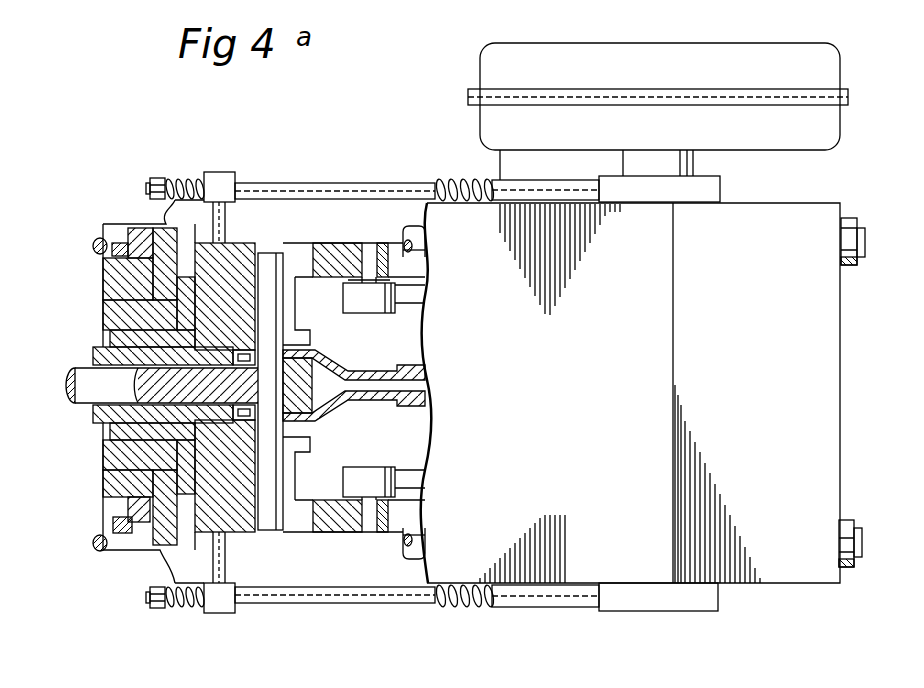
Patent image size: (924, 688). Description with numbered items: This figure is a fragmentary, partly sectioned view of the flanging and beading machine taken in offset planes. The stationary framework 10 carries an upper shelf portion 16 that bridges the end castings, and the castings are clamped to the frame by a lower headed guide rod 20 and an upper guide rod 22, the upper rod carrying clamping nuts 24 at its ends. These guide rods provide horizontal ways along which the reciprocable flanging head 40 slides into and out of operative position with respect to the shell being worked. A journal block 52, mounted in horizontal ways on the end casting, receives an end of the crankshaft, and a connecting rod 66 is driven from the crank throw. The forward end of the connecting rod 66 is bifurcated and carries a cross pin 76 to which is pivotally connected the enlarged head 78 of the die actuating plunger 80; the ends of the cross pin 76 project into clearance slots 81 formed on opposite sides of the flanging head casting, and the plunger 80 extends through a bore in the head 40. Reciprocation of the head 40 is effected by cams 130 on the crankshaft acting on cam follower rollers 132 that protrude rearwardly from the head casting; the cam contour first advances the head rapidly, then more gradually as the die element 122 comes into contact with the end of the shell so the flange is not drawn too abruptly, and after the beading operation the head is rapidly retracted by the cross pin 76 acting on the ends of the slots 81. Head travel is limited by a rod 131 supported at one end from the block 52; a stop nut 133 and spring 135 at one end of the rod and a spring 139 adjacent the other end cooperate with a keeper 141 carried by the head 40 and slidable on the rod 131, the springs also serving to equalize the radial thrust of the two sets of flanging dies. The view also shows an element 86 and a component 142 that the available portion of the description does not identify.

The stationary framework 10 is at (806, 386).
The upper shelf portion 16 is at (563, 455).
The headed guide rod 20 is at (108, 233).
The upper guide rod 22 is at (422, 242).
The clamping nut 24 is at (852, 222).
The reciprocable flanging head 40 is at (244, 535).
The journal block 52 is at (706, 196).
The connecting rod 66 is at (425, 363).
The cross pin 76 is at (268, 268).
The enlarged head 78 is at (318, 356).
The die actuating plunger 80 is at (80, 368).
The clearance slot 81 is at (302, 250).
The bearing housing 86 is at (103, 329).
The die element 122 is at (134, 546).
The cam 130 is at (428, 298).
The rod 131 is at (311, 183).
The roller 132 is at (343, 292).
The stop nut 133 is at (160, 176).
The spring 135 is at (192, 178).
The spring 139 is at (445, 181).
The keeper 141 is at (228, 178).
The reservoir 142 is at (705, 60).